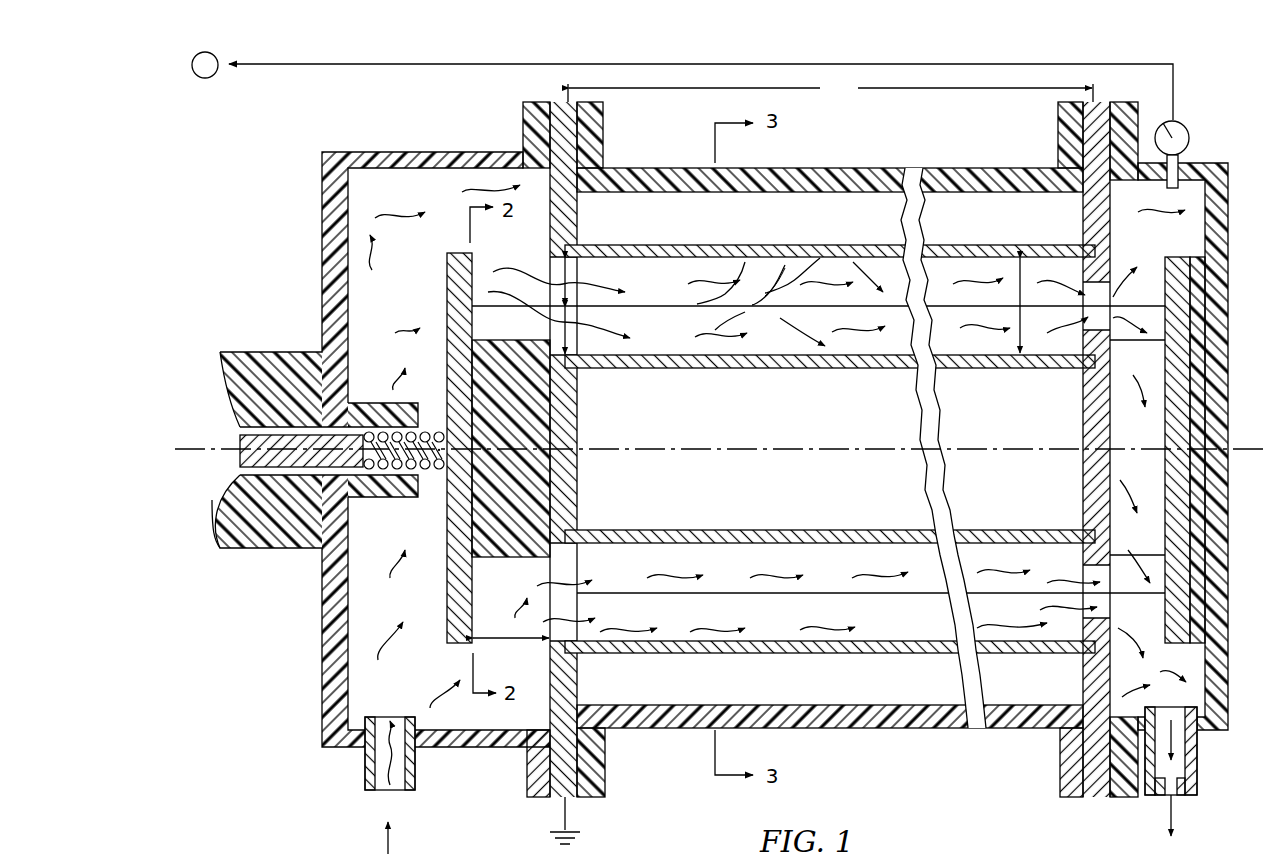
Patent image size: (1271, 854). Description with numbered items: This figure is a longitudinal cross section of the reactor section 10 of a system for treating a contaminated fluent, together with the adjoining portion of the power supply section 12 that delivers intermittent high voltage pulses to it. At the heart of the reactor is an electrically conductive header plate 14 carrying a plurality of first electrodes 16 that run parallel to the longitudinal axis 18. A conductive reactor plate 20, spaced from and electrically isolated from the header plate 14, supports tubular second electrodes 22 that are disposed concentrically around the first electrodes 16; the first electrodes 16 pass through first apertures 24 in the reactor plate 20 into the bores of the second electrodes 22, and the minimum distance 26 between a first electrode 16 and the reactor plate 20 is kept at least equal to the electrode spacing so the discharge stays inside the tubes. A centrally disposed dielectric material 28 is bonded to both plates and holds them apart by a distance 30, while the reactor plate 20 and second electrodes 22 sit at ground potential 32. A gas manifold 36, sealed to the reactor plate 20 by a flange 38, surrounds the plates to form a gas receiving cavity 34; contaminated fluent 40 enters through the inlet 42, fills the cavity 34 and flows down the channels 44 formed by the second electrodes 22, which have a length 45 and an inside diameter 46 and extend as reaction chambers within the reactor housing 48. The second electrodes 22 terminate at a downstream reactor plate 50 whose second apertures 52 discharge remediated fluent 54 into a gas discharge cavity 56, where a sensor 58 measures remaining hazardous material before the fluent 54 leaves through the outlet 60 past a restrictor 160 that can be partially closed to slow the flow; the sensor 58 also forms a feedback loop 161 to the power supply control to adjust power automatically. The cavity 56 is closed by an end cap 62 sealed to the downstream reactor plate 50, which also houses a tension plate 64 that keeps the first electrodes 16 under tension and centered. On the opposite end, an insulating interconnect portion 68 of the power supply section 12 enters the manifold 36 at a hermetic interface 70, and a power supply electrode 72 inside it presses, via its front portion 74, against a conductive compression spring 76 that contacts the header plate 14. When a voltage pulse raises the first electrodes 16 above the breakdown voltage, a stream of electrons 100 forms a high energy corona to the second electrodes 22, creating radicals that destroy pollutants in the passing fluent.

The reactor section 10 is at (406, 134).
The power supply section 12 is at (248, 326).
The header plate 14 is at (453, 288).
The first electrodes 16 is at (850, 300).
The longitudinal axis 18 is at (178, 450).
The reactor plate 20 is at (552, 212).
The second electrodes 22 is at (842, 250).
The first apertures 24 is at (565, 288).
The minimum distance 26 is at (565, 328).
The dielectric material 28 is at (562, 490).
The distance 30 is at (500, 638).
The ground potential 32 is at (580, 832).
The gas receiving cavity 34 is at (372, 232).
The gas manifold 36 is at (335, 682).
The flange 38 is at (527, 790).
The contaminated fluent 40 is at (388, 838).
The inlet 42 is at (413, 782).
The channels 44 is at (745, 262).
The length 45 is at (830, 89).
The inside diameter 46 is at (1022, 320).
The reactor housing 48 is at (885, 727).
The downstream reactor plate 50 is at (1090, 790).
The second apertures 52 is at (1108, 607).
The remediated fluent 54 is at (1171, 822).
The gas discharge cavity 56 is at (1125, 197).
The sensor 58 is at (1185, 128).
The outlet 60 is at (1195, 770).
The end cap 62 is at (1122, 110).
The tension plate 64 is at (1185, 425).
The interconnect portion 68 is at (240, 549).
The interface 70 is at (348, 403).
The power supply electrode 72 is at (215, 510).
The front portion 74 is at (372, 470).
The compression spring 76 is at (440, 470).
The stream of electrons 100 is at (785, 268).
The restrictor 160 is at (1147, 792).
The feedback loop 161 is at (340, 66).